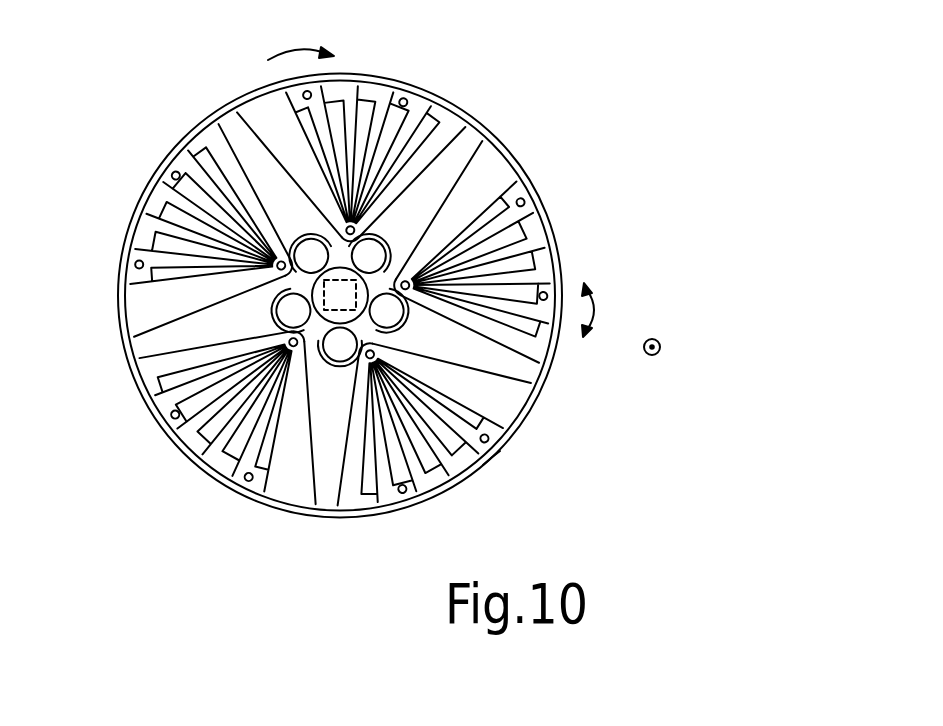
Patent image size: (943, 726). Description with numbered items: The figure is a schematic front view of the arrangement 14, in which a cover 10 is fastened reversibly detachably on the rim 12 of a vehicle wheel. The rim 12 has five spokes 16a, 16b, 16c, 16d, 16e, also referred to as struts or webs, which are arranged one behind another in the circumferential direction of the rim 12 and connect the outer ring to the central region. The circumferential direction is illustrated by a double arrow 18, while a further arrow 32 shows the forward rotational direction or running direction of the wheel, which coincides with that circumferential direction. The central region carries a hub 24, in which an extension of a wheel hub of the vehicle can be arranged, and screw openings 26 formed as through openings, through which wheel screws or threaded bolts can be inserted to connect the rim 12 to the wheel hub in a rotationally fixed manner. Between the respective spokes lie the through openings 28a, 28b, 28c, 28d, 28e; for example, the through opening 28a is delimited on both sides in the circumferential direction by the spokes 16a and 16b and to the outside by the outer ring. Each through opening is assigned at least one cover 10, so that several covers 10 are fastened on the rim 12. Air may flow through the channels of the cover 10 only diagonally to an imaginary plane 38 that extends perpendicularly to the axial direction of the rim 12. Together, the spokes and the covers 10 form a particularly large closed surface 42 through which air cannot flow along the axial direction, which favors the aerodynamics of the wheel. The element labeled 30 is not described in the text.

The cover 10 is at (548, 214).
The rim 12 is at (488, 129).
The arrangement 14 is at (547, 183).
The spoke 16a is at (548, 372).
The spoke 16b is at (498, 153).
The spoke 16c is at (236, 120).
The spoke 16d is at (136, 344).
The spoke 16e is at (318, 508).
The double arrow 18 is at (615, 310).
The hub 24 is at (135, 268).
The screw opening 26 is at (334, 360).
The through opening 28a is at (558, 246).
The through opening 28b is at (438, 100).
The through opening 28c is at (187, 160).
The through opening 28d is at (177, 452).
The through opening 28e is at (439, 478).
The axis symbol 30 is at (661, 345).
The arrow 32 is at (298, 33).
The plane 38 is at (401, 319).
The closed surface 42 is at (490, 455).